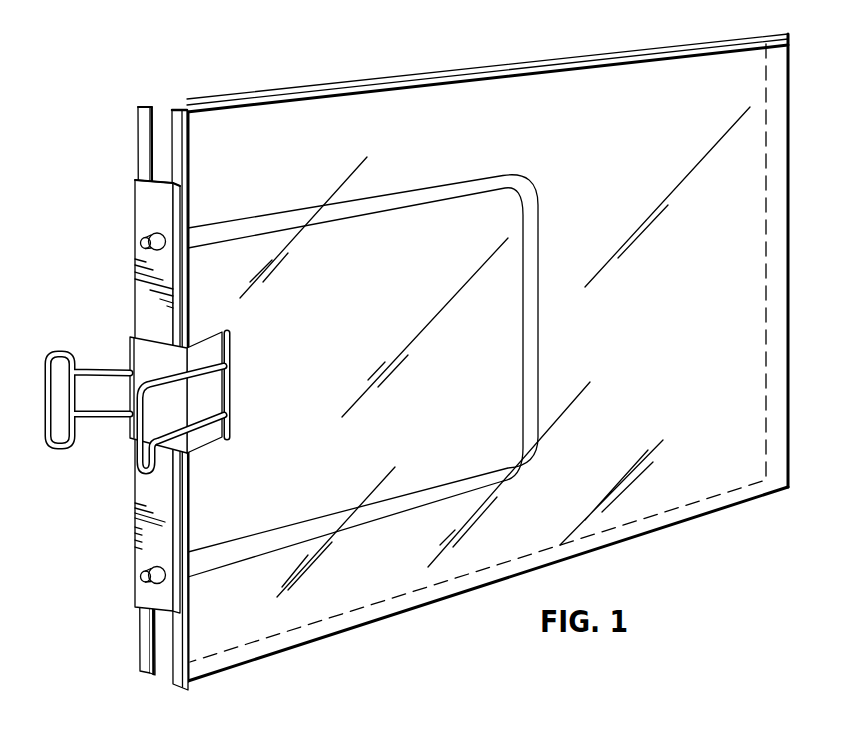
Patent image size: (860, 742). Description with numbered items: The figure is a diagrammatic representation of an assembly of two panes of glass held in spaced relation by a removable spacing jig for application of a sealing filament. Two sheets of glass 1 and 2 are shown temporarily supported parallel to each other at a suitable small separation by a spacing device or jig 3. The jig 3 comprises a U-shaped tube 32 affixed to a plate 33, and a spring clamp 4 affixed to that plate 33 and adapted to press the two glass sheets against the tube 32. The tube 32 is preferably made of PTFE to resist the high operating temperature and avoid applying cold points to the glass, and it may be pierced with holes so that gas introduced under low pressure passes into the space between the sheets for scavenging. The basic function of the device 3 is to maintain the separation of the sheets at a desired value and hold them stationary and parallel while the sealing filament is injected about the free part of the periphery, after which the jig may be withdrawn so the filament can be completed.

The sheet of glass 1 is at (143, 140).
The sheet of glass 2 is at (180, 147).
The spacing device or jig 3 is at (333, 196).
The spring clamp 4 is at (142, 357).
The U-shaped tube 32 is at (535, 333).
The plate 33 is at (143, 522).